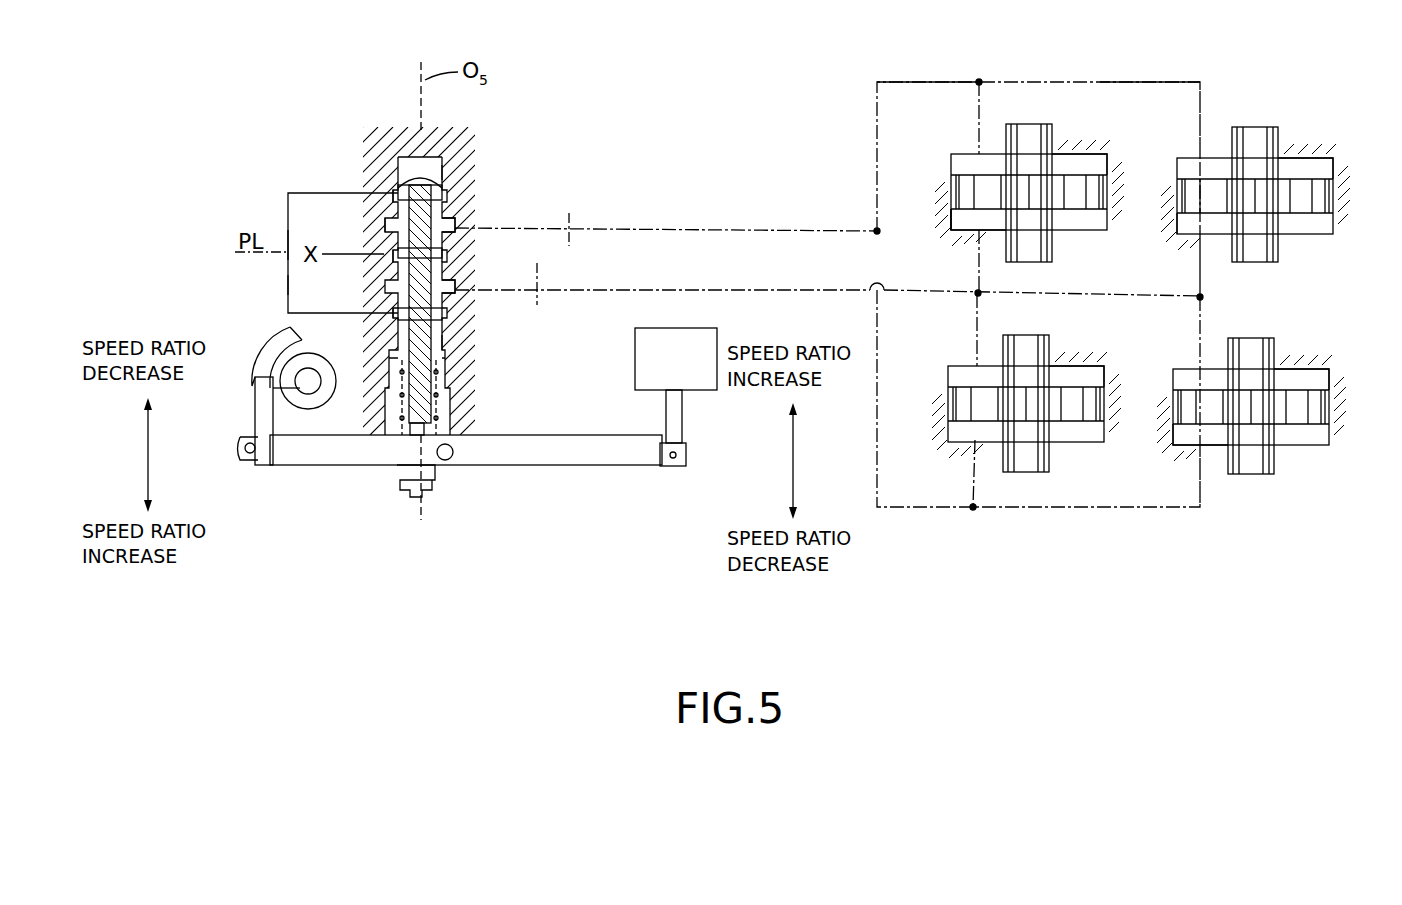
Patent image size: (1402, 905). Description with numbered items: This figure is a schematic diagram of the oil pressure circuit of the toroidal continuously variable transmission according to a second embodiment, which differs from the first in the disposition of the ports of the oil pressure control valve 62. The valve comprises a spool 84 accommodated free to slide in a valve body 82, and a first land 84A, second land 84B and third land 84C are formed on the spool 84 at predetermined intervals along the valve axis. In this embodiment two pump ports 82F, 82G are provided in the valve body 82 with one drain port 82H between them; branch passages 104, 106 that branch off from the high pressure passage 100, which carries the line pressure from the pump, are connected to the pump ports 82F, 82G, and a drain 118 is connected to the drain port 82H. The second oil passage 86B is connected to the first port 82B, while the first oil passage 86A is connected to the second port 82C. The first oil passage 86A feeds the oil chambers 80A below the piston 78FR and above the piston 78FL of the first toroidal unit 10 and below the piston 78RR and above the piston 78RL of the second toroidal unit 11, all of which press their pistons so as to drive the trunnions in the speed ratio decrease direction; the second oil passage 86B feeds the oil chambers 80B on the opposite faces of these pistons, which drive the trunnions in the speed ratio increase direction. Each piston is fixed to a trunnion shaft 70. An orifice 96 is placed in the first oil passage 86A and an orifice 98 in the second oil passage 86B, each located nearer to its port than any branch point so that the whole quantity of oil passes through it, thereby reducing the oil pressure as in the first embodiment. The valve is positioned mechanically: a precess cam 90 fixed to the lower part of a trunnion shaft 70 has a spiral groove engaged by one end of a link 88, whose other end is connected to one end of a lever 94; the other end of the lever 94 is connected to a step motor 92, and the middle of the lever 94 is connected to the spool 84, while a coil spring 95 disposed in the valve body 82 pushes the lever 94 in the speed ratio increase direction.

The first toroidal unit 10 is at (1077, 126).
The second toroidal unit 11 is at (1302, 129).
The oil pressure control valve 62 is at (486, 167).
The trunnion shaft 70 is at (310, 384).
The piston 78FR is at (1078, 205).
The piston 78RR is at (1303, 208).
The piston 78FL is at (1075, 415).
The piston 78RL is at (1300, 418).
The oil chamber 80A is at (1098, 372).
The oil chamber 80B is at (1098, 160).
The valve body 82 is at (372, 142).
The first port 82B is at (447, 300).
The second port 82C is at (449, 226).
The pump port 82F is at (394, 196).
The pump port 82G is at (393, 318).
The drain port 82H is at (386, 265).
The spool 84 is at (397, 163).
The first land 84A is at (443, 170).
The second land 84B is at (448, 256).
The third land 84C is at (445, 340).
The first oil passage 86A is at (720, 292).
The second oil passage 86B is at (738, 229).
The link 88 is at (268, 413).
The precess cam 90 is at (268, 345).
The step motor 92 is at (635, 366).
The lever 94 is at (547, 455).
The coil spring 95 is at (404, 397).
The orifice 96 is at (539, 302).
The orifice 98 is at (571, 222).
The high pressure passage 100 is at (283, 250).
The branch passage 104 is at (330, 193).
The branch passage 106 is at (288, 283).
The drain 118 is at (386, 228).